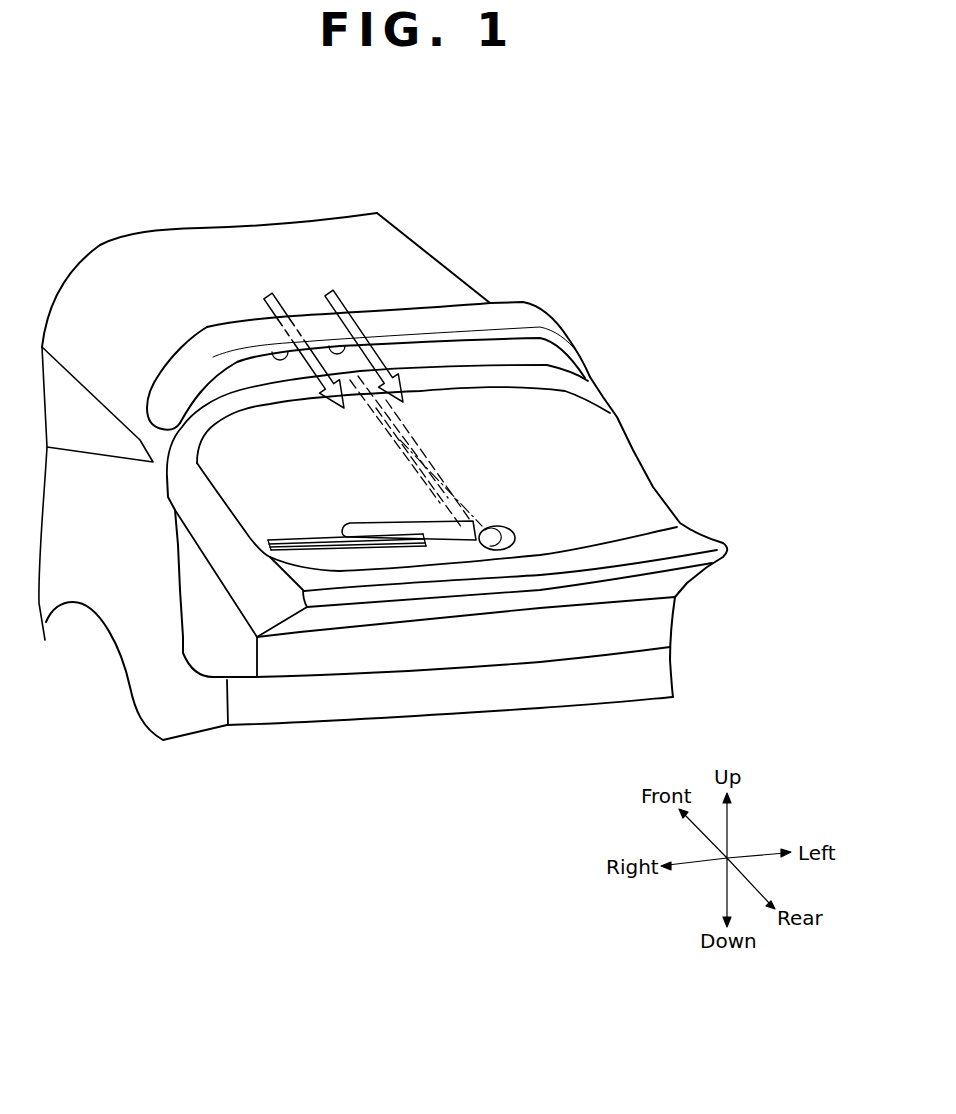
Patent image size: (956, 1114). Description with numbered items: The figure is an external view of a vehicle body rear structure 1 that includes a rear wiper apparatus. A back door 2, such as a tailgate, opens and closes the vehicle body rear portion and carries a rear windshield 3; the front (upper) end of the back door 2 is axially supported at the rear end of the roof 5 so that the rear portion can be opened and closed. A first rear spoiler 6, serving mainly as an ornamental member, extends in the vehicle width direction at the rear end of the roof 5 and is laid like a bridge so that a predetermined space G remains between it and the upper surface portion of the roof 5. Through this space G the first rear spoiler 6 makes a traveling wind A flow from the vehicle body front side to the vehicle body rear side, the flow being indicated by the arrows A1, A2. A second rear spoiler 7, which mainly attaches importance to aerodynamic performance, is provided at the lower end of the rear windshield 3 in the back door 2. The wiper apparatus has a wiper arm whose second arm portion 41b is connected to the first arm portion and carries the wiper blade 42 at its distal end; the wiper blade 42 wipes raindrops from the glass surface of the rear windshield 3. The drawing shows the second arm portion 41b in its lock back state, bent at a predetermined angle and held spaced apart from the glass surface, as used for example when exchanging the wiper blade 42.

The vehicle body rear structure 1 is at (607, 200).
The back door 2 is at (472, 643).
The rear windshield 3 is at (620, 477).
The roof 5 is at (333, 217).
The first rear spoiler 6 is at (172, 383).
The second rear spoiler 7 is at (728, 550).
The second arm portion 41b is at (413, 523).
The wiper blade 42 is at (300, 533).
The traveling wind A is at (350, 270).
The air flow A1 is at (295, 339).
The air flow A2 is at (355, 335).
The predetermined space G is at (440, 353).